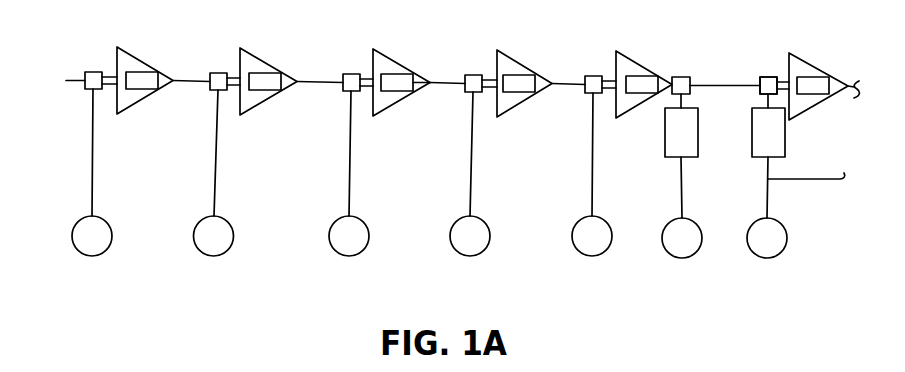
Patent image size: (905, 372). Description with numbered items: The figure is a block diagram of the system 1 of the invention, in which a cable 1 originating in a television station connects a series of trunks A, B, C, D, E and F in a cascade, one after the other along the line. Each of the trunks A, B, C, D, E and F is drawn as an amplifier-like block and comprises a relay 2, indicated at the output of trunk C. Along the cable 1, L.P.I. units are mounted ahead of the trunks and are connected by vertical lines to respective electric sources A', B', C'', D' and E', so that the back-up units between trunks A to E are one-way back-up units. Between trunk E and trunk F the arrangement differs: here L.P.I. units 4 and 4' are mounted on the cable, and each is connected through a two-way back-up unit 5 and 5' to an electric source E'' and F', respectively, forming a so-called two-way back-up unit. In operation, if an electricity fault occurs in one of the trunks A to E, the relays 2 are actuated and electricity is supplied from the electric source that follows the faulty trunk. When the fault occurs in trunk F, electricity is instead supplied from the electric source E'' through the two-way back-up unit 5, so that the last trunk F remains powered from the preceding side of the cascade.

The cable 1 is at (78, 81).
The relay 2 is at (418, 72).
The L.P.I. unit 4 is at (688, 68).
The L.P.I. unit 4' is at (757, 68).
The two-way back-up unit 5 is at (681, 125).
The two-way back-up unit 5' is at (798, 136).
The trunk A is at (129, 67).
The trunk B is at (253, 68).
The trunk C is at (386, 70).
The trunk D is at (508, 72).
The trunk E is at (628, 71).
The trunk F is at (804, 74).
The electric source A' is at (92, 188).
The electric source B' is at (214, 188).
The electric source C'' is at (349, 189).
The electric source D' is at (470, 189).
The electric source E' is at (592, 190).
The electric source E'' is at (683, 223).
The electric source F' is at (766, 223).